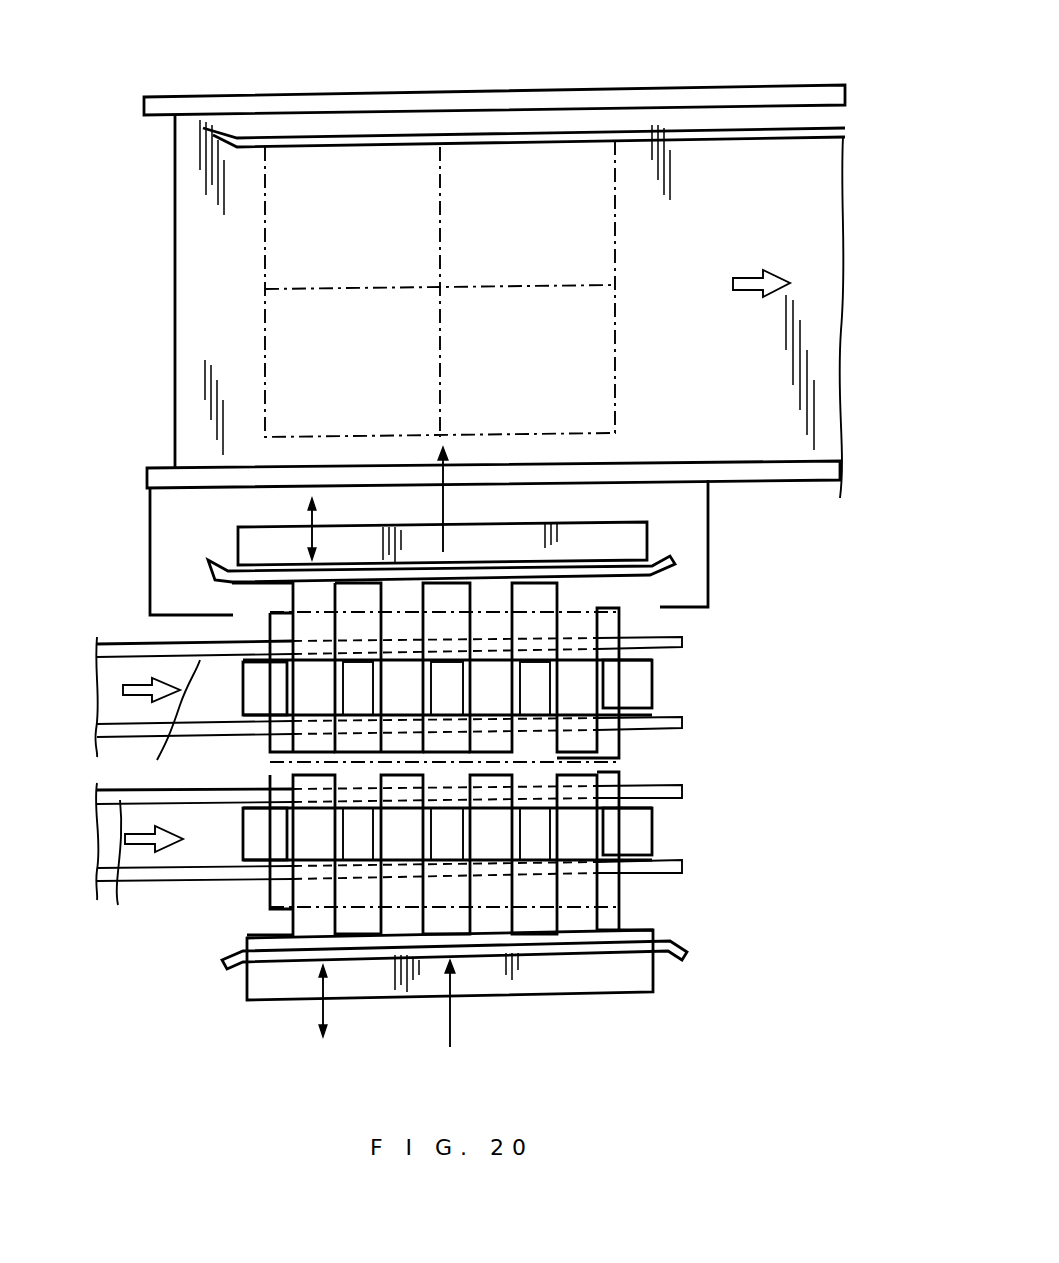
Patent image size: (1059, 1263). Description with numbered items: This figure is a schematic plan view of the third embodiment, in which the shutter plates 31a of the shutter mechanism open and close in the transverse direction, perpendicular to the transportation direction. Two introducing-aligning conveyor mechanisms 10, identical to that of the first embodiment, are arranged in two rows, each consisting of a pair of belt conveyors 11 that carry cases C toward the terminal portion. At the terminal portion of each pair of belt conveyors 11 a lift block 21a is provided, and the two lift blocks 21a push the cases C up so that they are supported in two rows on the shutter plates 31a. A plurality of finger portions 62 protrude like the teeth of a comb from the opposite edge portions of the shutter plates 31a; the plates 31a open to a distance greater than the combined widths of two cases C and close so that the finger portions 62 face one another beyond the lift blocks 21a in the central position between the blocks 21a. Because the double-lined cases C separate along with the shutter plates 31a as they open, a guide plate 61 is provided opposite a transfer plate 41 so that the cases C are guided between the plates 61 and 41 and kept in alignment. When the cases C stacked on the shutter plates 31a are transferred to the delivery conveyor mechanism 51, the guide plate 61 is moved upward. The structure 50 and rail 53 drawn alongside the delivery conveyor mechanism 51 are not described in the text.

The upper frame / guide 50 is at (607, 88).
The rail 53 is at (738, 138).
The delivery conveyor mechanism 51 is at (192, 290).
The shutter plate 31a is at (632, 542).
The transfer plate 41 is at (633, 955).
The guide plate 61 is at (627, 582).
The finger portion 62 is at (583, 682).
The lift block 21a is at (650, 695).
The introducing-aligning conveyor mechanism 10 is at (123, 638).
The belt conveyor 11 is at (150, 796).
The case C is at (265, 262).